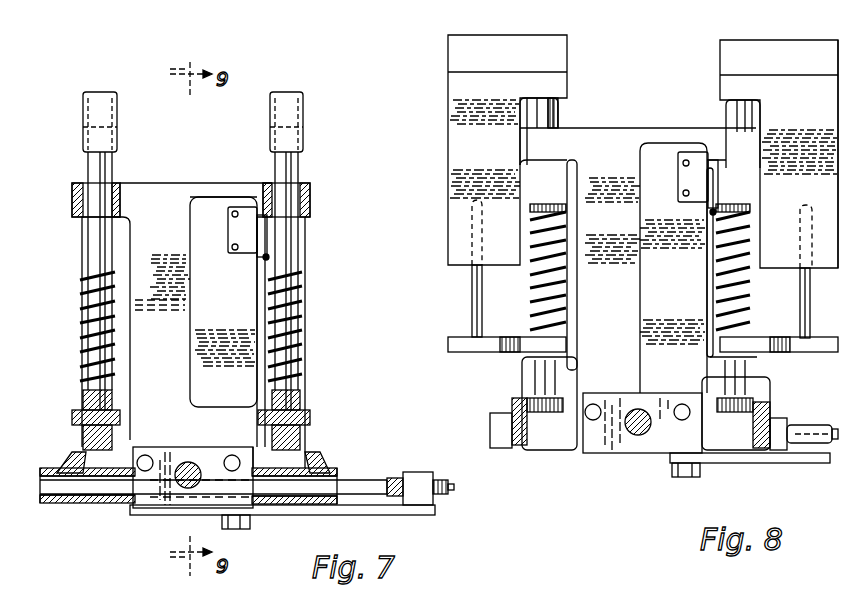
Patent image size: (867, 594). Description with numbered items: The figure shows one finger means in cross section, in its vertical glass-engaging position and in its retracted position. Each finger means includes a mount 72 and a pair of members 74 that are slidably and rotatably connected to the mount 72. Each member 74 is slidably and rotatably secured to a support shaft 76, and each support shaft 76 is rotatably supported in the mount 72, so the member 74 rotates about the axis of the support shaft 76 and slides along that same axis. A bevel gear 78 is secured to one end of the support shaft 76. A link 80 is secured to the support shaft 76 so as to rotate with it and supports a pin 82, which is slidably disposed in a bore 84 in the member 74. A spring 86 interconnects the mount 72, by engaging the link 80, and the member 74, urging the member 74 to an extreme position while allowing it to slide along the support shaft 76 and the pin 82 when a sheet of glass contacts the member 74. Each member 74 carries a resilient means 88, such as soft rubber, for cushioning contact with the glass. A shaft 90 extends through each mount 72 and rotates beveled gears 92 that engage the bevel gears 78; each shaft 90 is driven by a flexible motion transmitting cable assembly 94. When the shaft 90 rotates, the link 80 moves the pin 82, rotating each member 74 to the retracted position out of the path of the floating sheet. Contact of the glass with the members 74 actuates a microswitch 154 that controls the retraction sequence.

In FIG. 7, the mount 72 is at (175, 205).
In FIG. 8, the mount 72 is at (600, 145).
In FIG. 7, the member 74 is at (95, 240).
In FIG. 8, the member 74 is at (835, 90).
In FIG. 7, the support shaft 76 is at (110, 178).
In FIG. 8, the support shaft 76 is at (557, 112).
In FIG. 7, the bevel gear 78 is at (78, 448).
In FIG. 8, the bevel gear 78 is at (522, 400).
In FIG. 8, the link 80 is at (455, 346).
In FIG. 8, the pin 82 is at (472, 298).
In FIG. 8, the bore 84 is at (470, 215).
In FIG. 7, the spring 86 is at (85, 345).
In FIG. 8, the spring 86 is at (533, 275).
In FIG. 8, the resilient means 88 is at (555, 52).
In FIG. 7, the shaft 90 is at (375, 485).
In FIG. 7, the beveled gear 92 is at (62, 466).
In FIG. 8, the beveled gear 92 is at (516, 445).
In FIG. 7, the flexible motion transmitting cable assembly 94 is at (440, 496).
In FIG. 8, the flexible motion transmitting cable assembly 94 is at (815, 432).
In FIG. 7, the microswitch 154 is at (245, 215).
In FIG. 8, the microswitch 154 is at (680, 165).